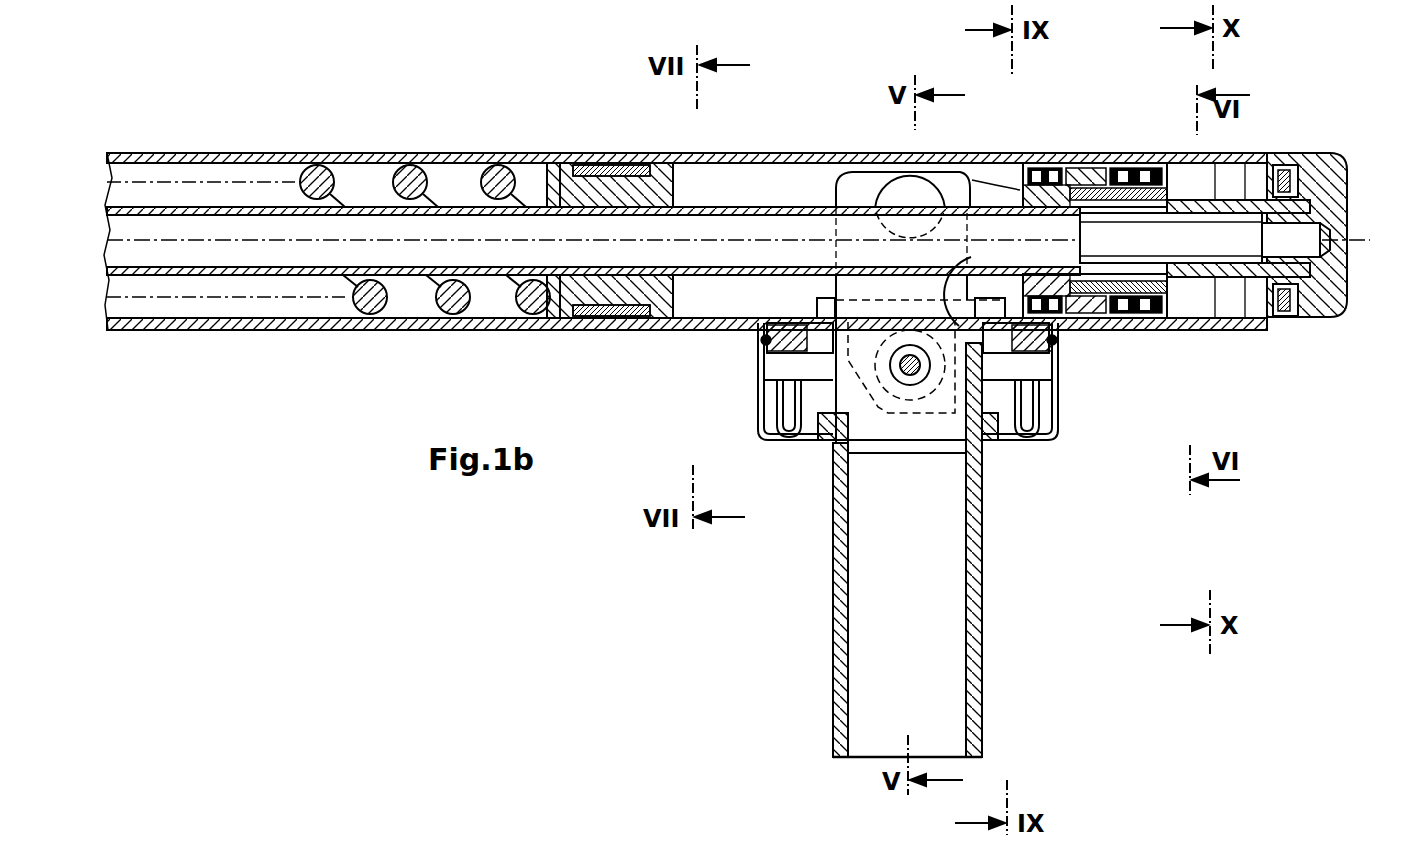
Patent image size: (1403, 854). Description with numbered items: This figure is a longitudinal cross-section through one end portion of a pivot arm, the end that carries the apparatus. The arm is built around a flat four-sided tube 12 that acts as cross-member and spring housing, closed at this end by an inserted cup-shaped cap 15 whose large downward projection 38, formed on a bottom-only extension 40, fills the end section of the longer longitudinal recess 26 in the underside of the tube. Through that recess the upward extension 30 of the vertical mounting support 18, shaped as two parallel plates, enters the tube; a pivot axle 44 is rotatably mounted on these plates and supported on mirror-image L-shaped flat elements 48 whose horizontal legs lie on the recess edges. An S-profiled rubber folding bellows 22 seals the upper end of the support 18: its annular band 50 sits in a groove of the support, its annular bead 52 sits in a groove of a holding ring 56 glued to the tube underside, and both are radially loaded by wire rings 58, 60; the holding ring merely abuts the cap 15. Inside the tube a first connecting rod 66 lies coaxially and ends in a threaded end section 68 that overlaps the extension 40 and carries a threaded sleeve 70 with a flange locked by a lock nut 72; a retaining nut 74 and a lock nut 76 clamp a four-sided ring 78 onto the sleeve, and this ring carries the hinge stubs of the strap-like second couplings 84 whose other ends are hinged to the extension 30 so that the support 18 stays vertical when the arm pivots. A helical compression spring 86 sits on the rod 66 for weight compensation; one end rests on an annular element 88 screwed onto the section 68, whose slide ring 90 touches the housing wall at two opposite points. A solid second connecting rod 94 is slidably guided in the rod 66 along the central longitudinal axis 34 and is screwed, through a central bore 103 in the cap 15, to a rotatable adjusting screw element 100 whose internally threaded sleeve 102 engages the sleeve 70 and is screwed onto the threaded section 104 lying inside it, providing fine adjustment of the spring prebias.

The four-sided tube 12 is at (342, 332).
The cap 15 is at (1284, 330).
The mounting support 18 is at (833, 565).
The folding bellows 22 is at (1062, 432).
The longitudinal recess 26 is at (812, 312).
The extension 30 is at (852, 190).
The central longitudinal axis 34 is at (1352, 240).
The downward projection 38 is at (1196, 330).
The extension 40 is at (1162, 330).
The pivot axle 44 is at (908, 375).
The L-shaped flat element 48 is at (975, 305).
The annular band 50 is at (966, 455).
The annular bead 52 is at (760, 340).
The holding ring 56 is at (1060, 380).
The wire ring 58 is at (806, 440).
The wire ring 60 is at (1065, 338).
The first connecting rod 66 is at (230, 206).
The threaded end section 68 is at (738, 208).
The threaded sleeve 70 is at (1095, 165).
The lock nut 72 is at (1040, 165).
The retaining nut 74 is at (1130, 165).
The lock nut 76 is at (1160, 165).
The four-sided ring 78 is at (1070, 165).
The second couplings 84 is at (985, 190).
The helical compression spring 86 is at (405, 165).
The annular element 88 is at (678, 190).
The slide ring 90 is at (595, 320).
The second connecting rod 94 is at (160, 228).
The adjusting screw element 100 is at (1345, 156).
The sleeve 102 is at (1238, 200).
The central bore 103 is at (1290, 168).
The threaded section 104 is at (1246, 330).